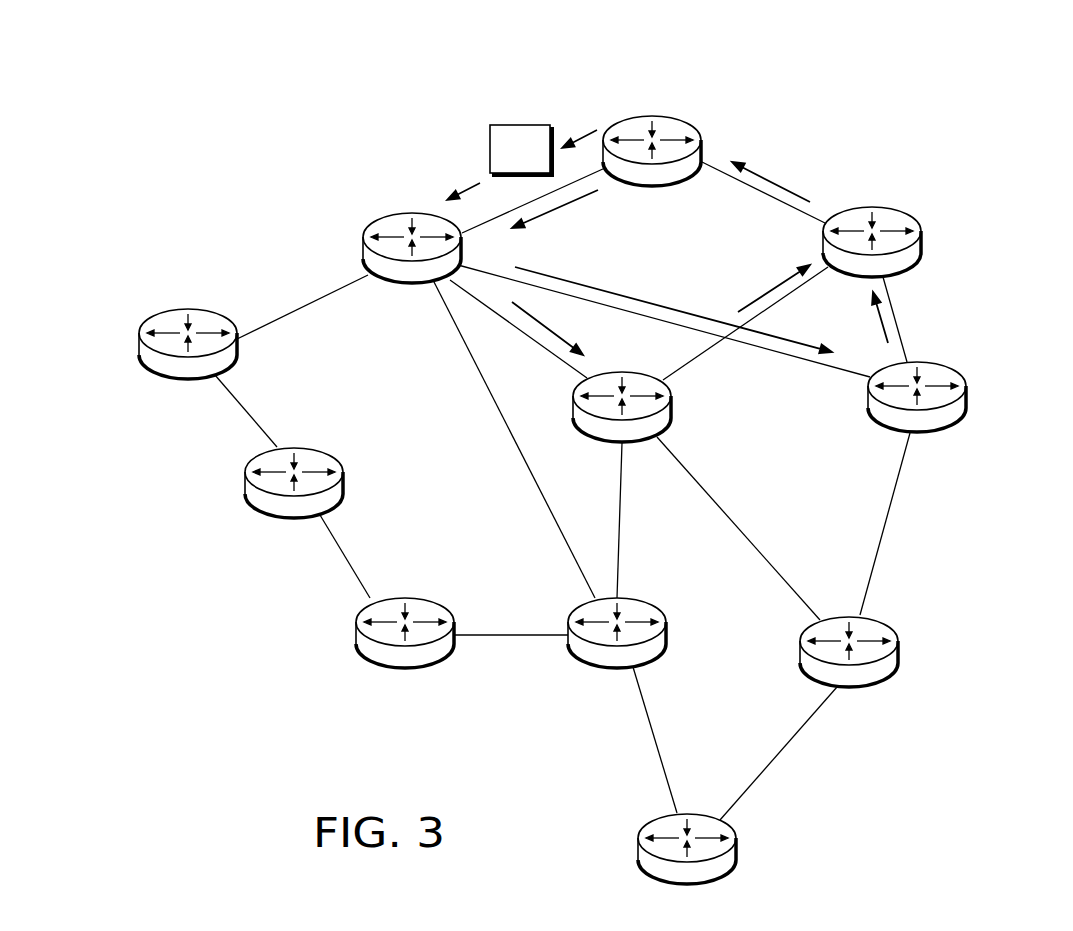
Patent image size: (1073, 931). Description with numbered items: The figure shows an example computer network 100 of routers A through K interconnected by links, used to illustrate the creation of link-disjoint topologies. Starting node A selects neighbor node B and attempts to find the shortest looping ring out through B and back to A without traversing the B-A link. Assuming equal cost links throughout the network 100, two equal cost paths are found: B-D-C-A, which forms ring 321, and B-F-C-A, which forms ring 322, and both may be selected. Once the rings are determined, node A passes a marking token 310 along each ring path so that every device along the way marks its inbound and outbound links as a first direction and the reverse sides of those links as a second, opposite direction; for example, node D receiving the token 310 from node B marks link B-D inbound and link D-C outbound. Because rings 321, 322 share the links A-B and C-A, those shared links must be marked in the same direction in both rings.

The computer network 100 is at (998, 133).
The marking token 310 is at (540, 163).
The ring 321 is at (540, 221).
The ring 322 is at (638, 298).